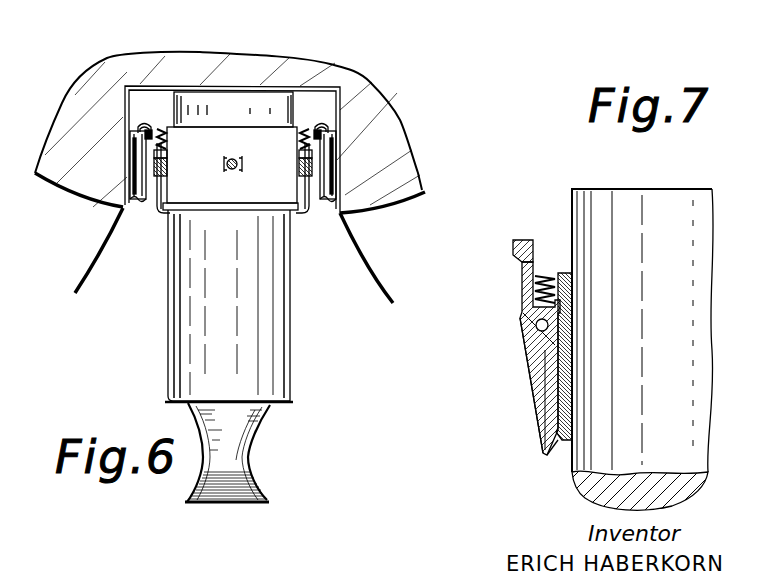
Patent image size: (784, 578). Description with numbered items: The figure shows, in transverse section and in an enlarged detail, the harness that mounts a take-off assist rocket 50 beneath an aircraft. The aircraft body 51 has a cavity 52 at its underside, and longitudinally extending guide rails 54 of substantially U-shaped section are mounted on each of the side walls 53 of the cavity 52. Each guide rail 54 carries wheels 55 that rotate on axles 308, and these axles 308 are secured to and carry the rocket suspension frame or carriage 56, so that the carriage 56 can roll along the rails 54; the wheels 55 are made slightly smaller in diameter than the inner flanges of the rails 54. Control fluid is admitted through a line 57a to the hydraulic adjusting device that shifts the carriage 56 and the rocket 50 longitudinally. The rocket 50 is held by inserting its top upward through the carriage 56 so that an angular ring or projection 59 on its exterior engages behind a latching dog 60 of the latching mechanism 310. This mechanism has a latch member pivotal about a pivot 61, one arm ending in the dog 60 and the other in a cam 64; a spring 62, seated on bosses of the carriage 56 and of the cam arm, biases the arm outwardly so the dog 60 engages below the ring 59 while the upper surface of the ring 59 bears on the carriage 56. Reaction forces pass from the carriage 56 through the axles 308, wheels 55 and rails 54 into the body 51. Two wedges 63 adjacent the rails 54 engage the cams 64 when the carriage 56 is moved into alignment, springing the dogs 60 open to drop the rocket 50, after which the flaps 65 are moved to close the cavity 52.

In FIG. 6, the rocket 50 is at (291, 392).
In FIG. 7, the rocket 50 is at (652, 215).
In FIG. 6, the aircraft body 51 is at (410, 186).
In FIG. 6, the cavity 52 is at (323, 100).
In FIG. 6, the side walls 53 is at (127, 118).
In FIG. 6, the guide rails 54 is at (130, 163).
In FIG. 6, the wheels 55 is at (140, 177).
In FIG. 6, the rocket suspension frame or carriage 56 is at (205, 142).
In FIG. 7, the rocket suspension frame or carriage 56 is at (556, 383).
In FIG. 6, the control fluid line 57a is at (233, 172).
In FIG. 6, the angular ring or projection 59 is at (275, 212).
In FIG. 7, the angular ring or projection 59 is at (558, 452).
In FIG. 6, the latching dog 60 is at (163, 214).
In FIG. 7, the latching dog 60 is at (542, 442).
In FIG. 7, the pivot 61 is at (520, 331).
In FIG. 6, the spring 62 is at (162, 136).
In FIG. 7, the spring 62 is at (558, 272).
In FIG. 6, the wedges 63 is at (140, 125).
In FIG. 6, the cam 64 is at (145, 128).
In FIG. 7, the cam 64 is at (513, 241).
In FIG. 6, the flaps 65 is at (188, 68).
In FIG. 6, the axles 308 is at (170, 170).
In FIG. 7, the latching mechanism 310 is at (523, 357).